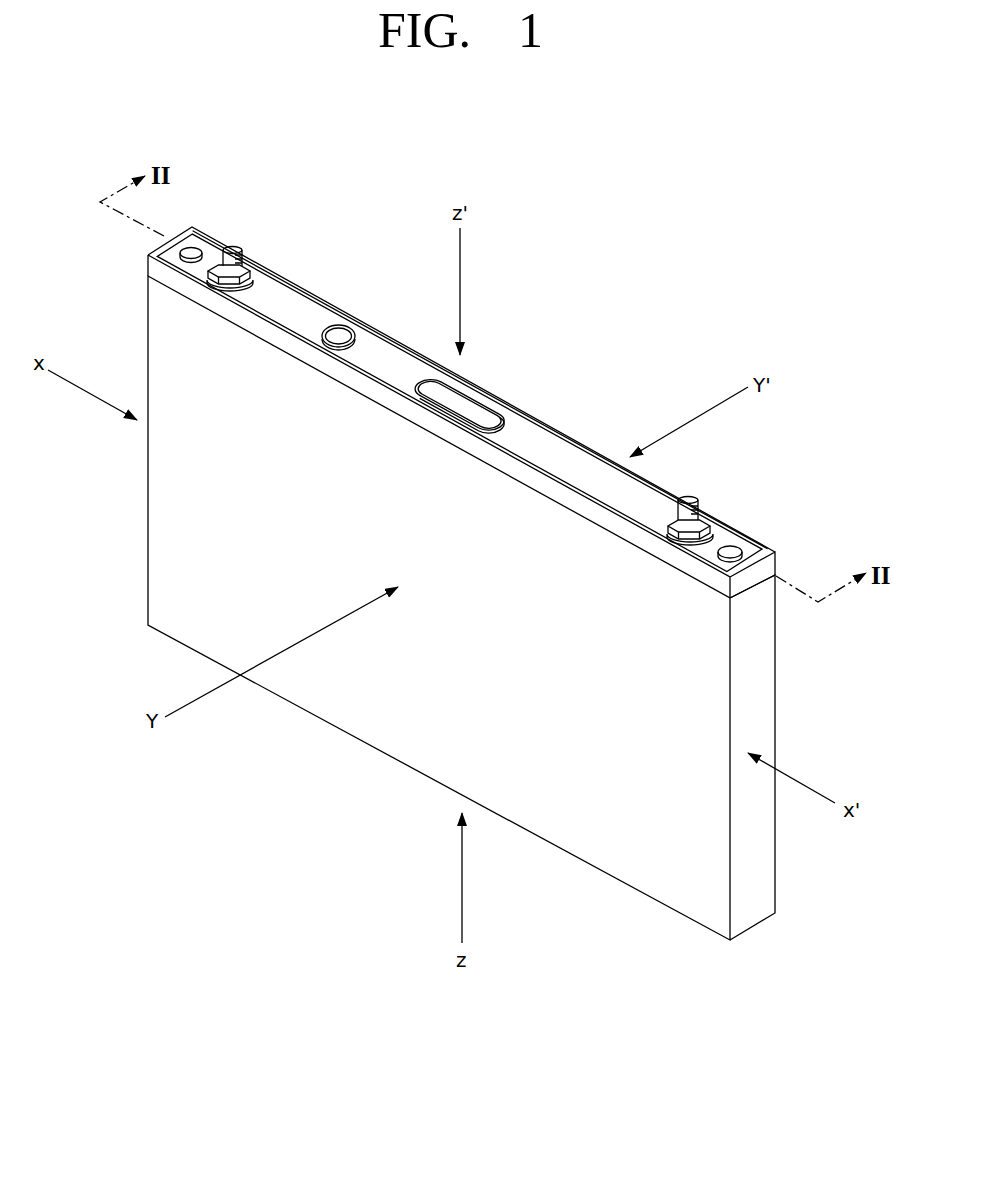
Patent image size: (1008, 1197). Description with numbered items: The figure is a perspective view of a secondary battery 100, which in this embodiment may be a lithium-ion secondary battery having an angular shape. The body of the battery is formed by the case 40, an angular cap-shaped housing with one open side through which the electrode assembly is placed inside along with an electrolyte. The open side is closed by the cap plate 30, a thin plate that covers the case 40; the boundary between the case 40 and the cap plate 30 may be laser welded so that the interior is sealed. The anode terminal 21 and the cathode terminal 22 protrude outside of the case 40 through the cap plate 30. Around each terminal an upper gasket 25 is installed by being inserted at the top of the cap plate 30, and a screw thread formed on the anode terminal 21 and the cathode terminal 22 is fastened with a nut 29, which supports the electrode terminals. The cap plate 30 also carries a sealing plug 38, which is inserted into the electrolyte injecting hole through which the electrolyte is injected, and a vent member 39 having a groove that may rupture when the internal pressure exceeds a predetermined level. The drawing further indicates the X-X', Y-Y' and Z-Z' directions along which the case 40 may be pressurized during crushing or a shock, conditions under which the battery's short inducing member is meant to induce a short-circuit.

The secondary battery 100 is at (658, 260).
The anode terminal 21 is at (233, 247).
The cathode terminal 22 is at (691, 498).
The upper gasket 25 is at (733, 542).
The nut 29 is at (711, 521).
The cap plate 30 is at (390, 367).
The sealing plug 38 is at (340, 334).
The vent member 39 is at (467, 407).
The case 40 is at (620, 860).